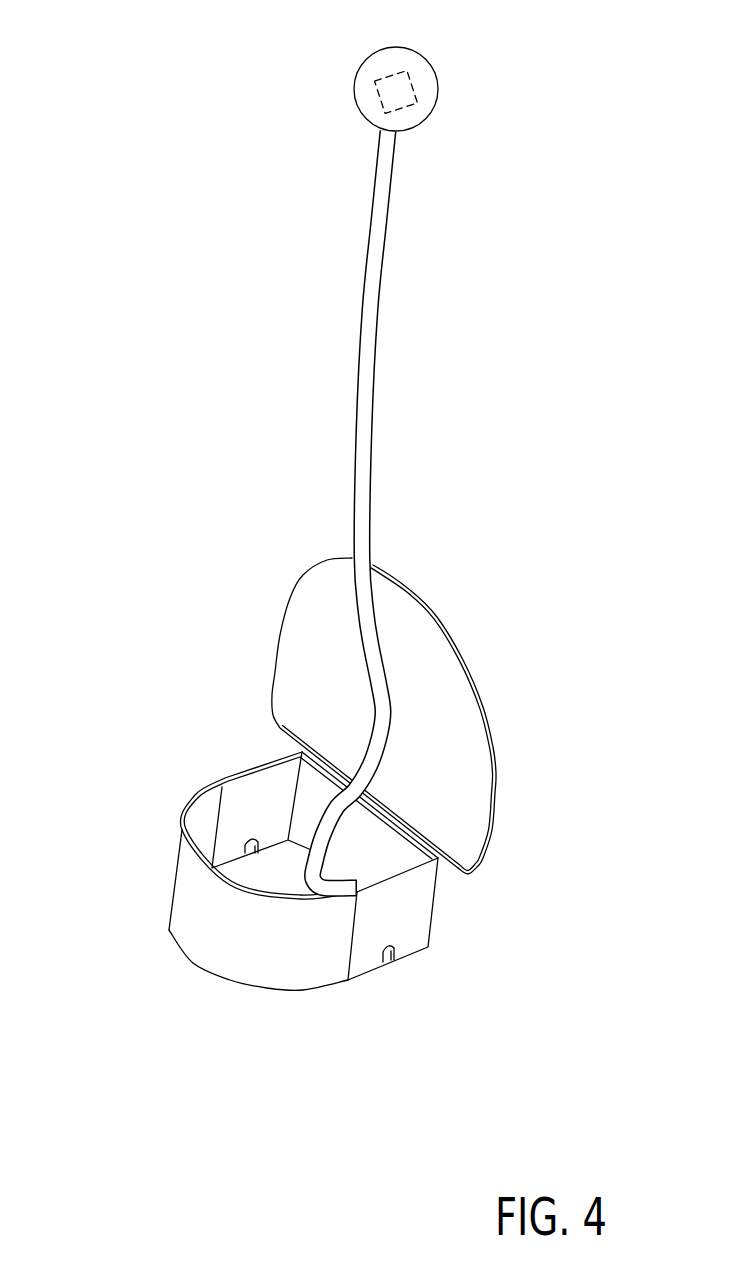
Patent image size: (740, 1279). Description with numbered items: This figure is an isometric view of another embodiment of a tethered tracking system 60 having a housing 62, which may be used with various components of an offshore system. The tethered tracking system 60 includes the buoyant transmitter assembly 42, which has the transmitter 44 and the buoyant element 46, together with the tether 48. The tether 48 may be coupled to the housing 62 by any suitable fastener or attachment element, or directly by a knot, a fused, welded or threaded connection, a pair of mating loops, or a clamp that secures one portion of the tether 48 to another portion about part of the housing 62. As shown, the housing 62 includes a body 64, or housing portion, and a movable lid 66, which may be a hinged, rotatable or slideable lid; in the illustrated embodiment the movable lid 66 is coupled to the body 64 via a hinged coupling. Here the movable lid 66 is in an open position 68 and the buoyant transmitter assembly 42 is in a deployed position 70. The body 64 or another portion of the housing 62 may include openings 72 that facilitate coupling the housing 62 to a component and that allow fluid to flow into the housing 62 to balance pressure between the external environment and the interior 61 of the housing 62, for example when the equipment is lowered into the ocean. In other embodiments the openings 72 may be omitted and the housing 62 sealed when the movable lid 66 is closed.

The buoyant transmitter assembly 42 is at (375, 444).
The transmitter 44 is at (412, 85).
The buoyant element 46 is at (428, 110).
The tether 48 is at (377, 310).
The tethered tracking system 60 is at (340, 777).
The interior 61 is at (200, 825).
The housing 62 is at (322, 874).
The body 64 is at (422, 912).
The movable lid 66 is at (433, 633).
The open position 68 is at (456, 716).
The deployed position 70 is at (391, 69).
The openings 72 is at (390, 960).